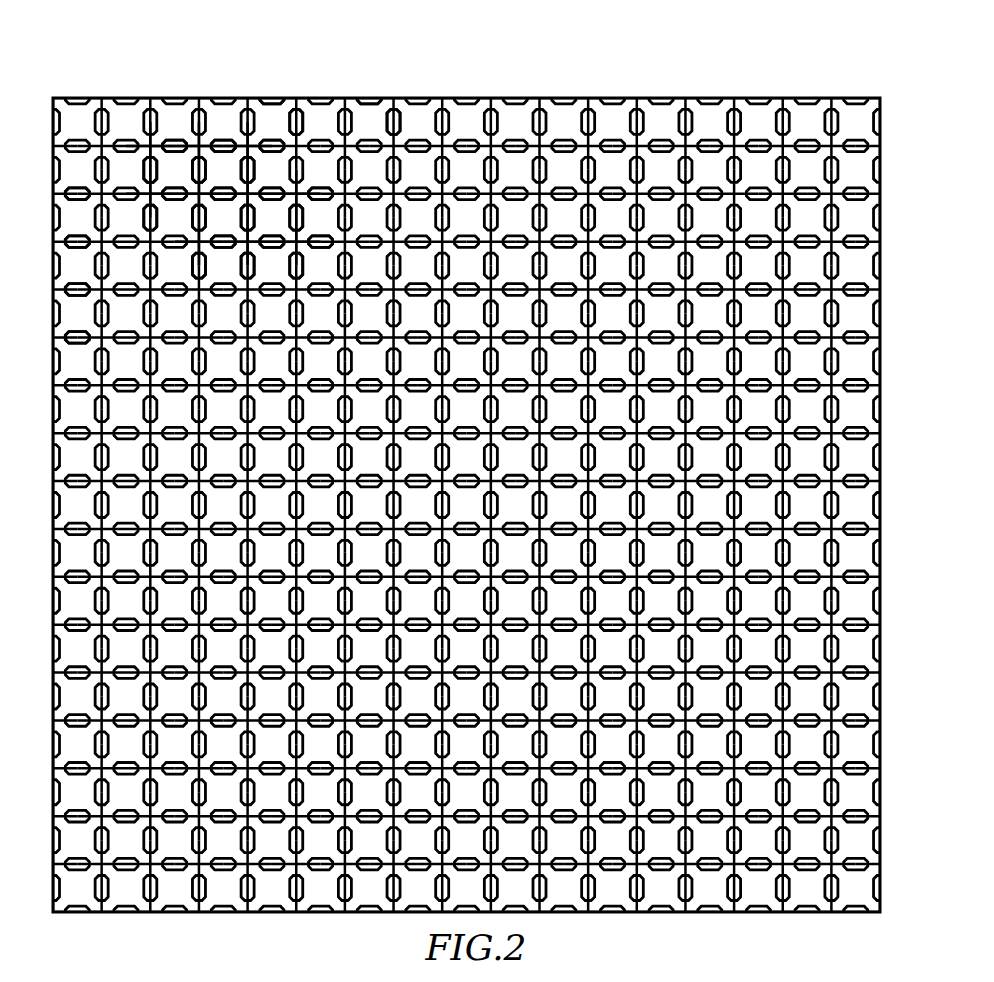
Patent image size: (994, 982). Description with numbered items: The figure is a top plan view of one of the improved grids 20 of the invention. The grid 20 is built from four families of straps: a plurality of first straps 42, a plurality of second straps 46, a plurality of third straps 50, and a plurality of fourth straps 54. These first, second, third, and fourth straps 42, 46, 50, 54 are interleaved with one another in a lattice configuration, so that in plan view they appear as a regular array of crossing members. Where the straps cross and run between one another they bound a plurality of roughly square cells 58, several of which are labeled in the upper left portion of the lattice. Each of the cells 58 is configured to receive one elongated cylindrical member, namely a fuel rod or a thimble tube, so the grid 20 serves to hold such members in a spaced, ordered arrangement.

The grid 20 is at (480, 74).
The first straps 42 is at (262, 100).
The second straps 46 is at (308, 102).
The third straps 50 is at (52, 144).
The fourth straps 54 is at (52, 195).
The cells 58 is at (165, 181).